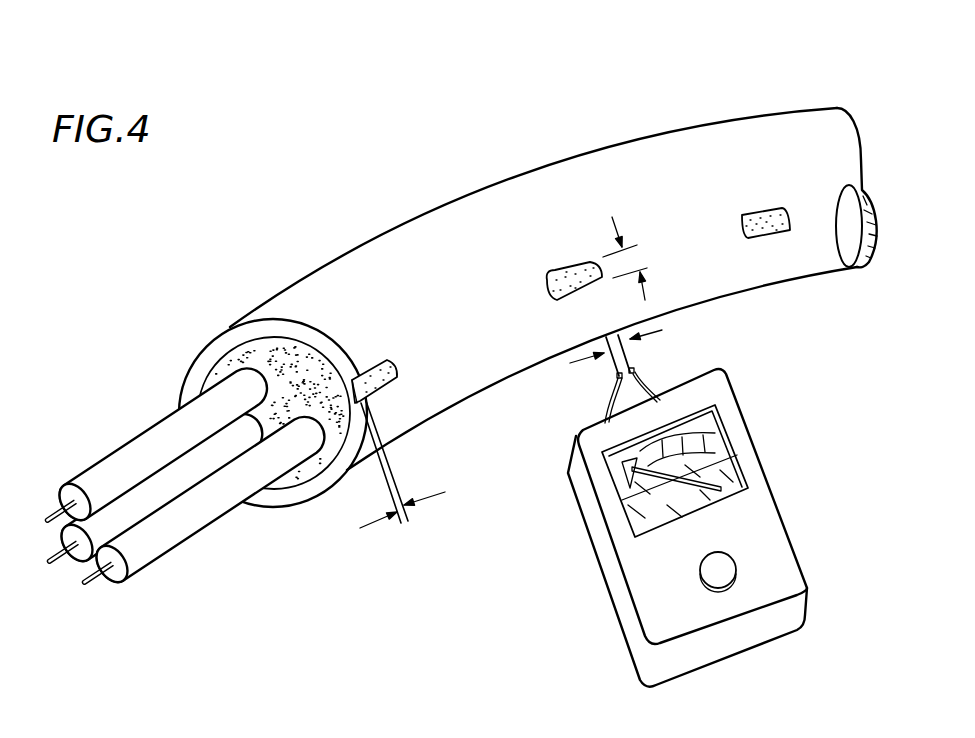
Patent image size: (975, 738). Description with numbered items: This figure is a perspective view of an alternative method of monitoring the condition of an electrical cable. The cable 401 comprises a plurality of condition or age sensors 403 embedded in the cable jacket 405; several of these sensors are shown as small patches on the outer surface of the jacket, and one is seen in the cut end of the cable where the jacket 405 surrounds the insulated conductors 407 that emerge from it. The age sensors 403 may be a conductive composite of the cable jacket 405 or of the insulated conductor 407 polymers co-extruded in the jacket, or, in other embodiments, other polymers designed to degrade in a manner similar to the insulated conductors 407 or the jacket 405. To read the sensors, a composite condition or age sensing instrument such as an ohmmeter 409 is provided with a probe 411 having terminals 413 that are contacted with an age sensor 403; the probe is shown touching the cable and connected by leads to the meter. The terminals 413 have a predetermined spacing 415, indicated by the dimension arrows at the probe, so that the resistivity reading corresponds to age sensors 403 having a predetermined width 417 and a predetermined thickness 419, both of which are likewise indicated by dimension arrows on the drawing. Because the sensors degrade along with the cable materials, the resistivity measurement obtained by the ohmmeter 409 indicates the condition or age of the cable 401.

The cable 401 is at (677, 132).
The age sensors 403 is at (560, 274).
The cable jacket 405 is at (208, 344).
The insulated conductors 407 is at (203, 530).
The ohmmeter 409 is at (774, 496).
The probe 411 is at (637, 379).
The terminals 413 is at (637, 372).
The predetermined spacing 415 is at (637, 339).
The predetermined width 417 is at (617, 246).
The predetermined thickness 419 is at (381, 475).